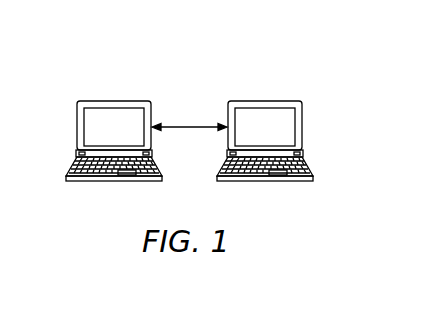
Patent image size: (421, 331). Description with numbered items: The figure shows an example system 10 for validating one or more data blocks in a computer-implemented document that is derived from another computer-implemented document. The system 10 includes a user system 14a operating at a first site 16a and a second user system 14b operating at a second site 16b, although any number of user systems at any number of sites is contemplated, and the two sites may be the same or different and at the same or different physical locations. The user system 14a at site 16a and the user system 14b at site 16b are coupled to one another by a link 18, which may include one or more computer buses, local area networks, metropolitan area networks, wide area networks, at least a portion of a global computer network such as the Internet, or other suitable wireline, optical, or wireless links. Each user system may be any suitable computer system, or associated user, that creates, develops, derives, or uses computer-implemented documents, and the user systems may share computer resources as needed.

The system 10 is at (340, 102).
The user system 14a is at (103, 101).
The user system 14b is at (275, 101).
The first site 16a is at (99, 197).
The second site 16b is at (278, 197).
The link 18 is at (200, 131).